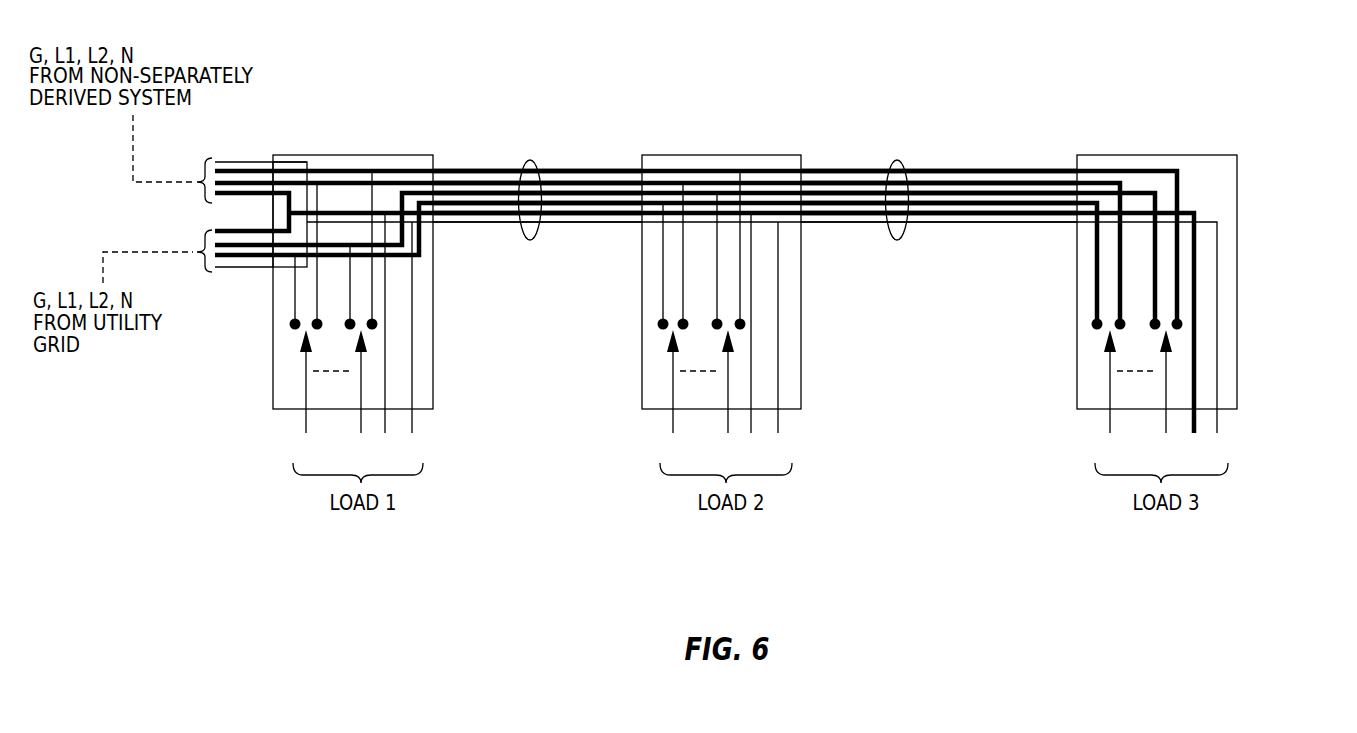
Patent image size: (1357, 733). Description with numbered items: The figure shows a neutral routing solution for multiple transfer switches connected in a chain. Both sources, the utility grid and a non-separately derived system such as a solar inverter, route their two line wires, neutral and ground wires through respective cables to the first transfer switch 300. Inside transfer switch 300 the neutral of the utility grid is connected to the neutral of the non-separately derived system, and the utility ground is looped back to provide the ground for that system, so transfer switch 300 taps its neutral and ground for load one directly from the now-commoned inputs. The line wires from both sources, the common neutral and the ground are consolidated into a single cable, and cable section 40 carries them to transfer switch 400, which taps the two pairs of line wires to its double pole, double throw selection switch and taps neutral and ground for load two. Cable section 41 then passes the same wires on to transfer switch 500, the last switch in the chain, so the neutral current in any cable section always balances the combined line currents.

The transfer switch 300 is at (407, 256).
The transfer switch 400 is at (775, 256).
The transfer switch 500 is at (1210, 256).
The cable section 40 is at (530, 240).
The cable section 41 is at (897, 240).